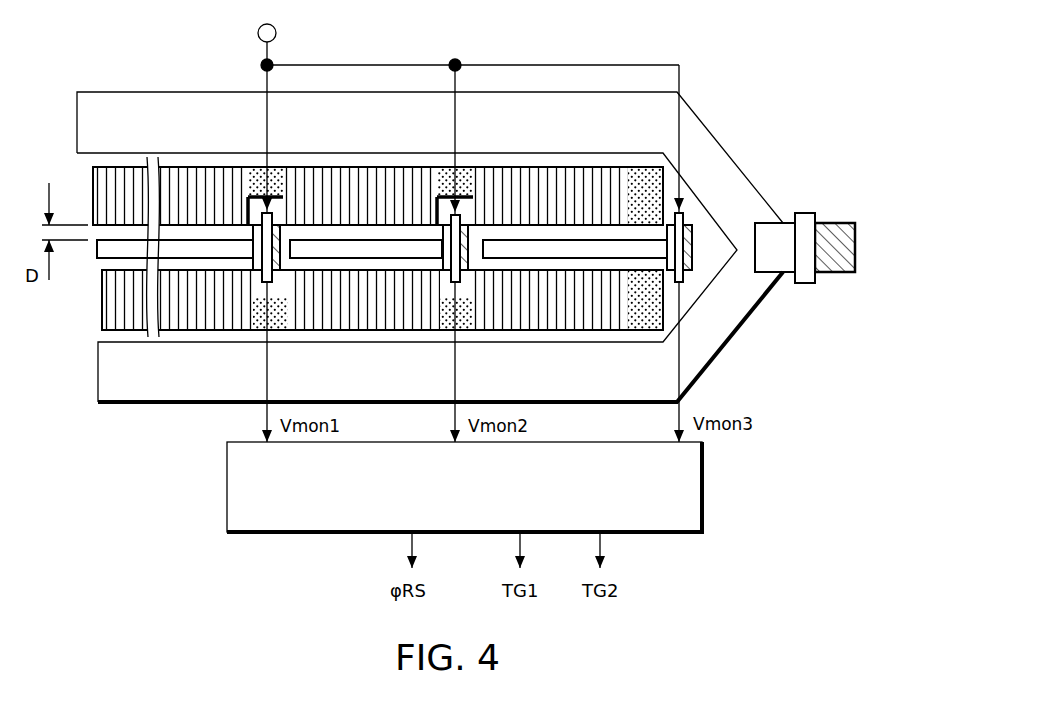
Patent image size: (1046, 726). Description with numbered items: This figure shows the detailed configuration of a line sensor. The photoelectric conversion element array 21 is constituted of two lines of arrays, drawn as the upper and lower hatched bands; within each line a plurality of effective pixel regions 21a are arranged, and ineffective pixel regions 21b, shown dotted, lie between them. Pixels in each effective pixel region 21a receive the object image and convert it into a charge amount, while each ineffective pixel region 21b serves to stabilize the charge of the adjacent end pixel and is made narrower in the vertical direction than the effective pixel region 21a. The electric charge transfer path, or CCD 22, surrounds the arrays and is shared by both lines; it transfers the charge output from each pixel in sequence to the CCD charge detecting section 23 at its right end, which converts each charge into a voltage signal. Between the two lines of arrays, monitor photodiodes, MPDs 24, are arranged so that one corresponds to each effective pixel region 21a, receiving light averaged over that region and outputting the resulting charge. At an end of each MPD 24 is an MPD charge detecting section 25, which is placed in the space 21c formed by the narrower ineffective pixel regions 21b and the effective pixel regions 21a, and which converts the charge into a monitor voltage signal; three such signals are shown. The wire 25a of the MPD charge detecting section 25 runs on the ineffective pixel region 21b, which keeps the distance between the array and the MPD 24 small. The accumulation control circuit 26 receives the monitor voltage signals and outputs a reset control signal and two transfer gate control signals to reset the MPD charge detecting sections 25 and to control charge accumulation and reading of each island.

The photoelectric conversion element array 21 is at (365, 242).
The effective pixel region 21a is at (125, 183).
The ineffective pixel region 21b is at (281, 170).
The space 21c is at (248, 207).
The electric charge transfer path (CCD) 22 is at (108, 96).
The CCD charge detecting section 23 is at (800, 213).
The monitor photodiode (MPD) 24 is at (495, 240).
The MPD charge detecting section 25 is at (693, 258).
The wire 25a is at (428, 62).
The accumulation control circuit 26 is at (704, 490).